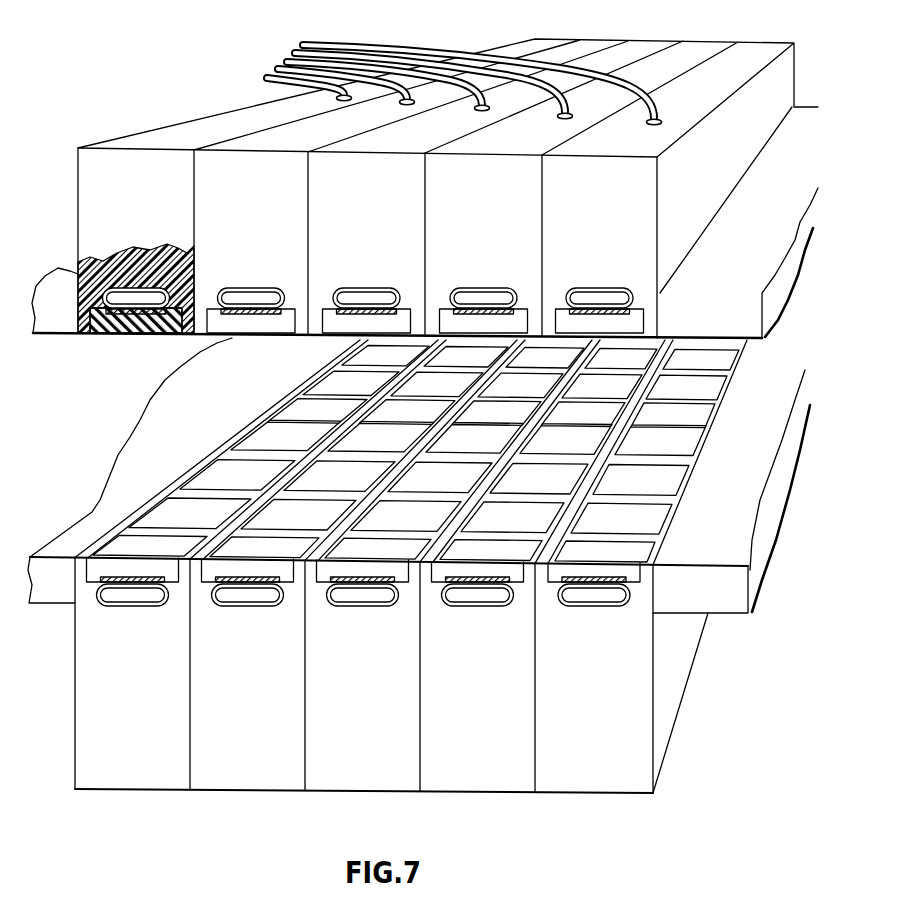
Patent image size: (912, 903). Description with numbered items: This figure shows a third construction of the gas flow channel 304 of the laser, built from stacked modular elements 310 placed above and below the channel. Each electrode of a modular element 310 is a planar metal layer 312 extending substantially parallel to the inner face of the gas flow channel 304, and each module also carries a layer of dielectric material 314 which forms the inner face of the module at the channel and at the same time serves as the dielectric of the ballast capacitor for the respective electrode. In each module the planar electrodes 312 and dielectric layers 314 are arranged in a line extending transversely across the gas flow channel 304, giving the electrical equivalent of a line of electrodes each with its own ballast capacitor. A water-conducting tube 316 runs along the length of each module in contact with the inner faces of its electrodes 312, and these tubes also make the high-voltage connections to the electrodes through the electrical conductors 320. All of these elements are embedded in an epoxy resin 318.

The gas flow channel 304 is at (100, 446).
The modular element 310 is at (612, 695).
The planar metal layer 312 is at (131, 335).
The dielectric material layer 314 is at (110, 553).
The water-conducting tube 316 is at (180, 247).
The epoxy resin 318 is at (78, 275).
The electrical conductors 320 is at (353, 44).